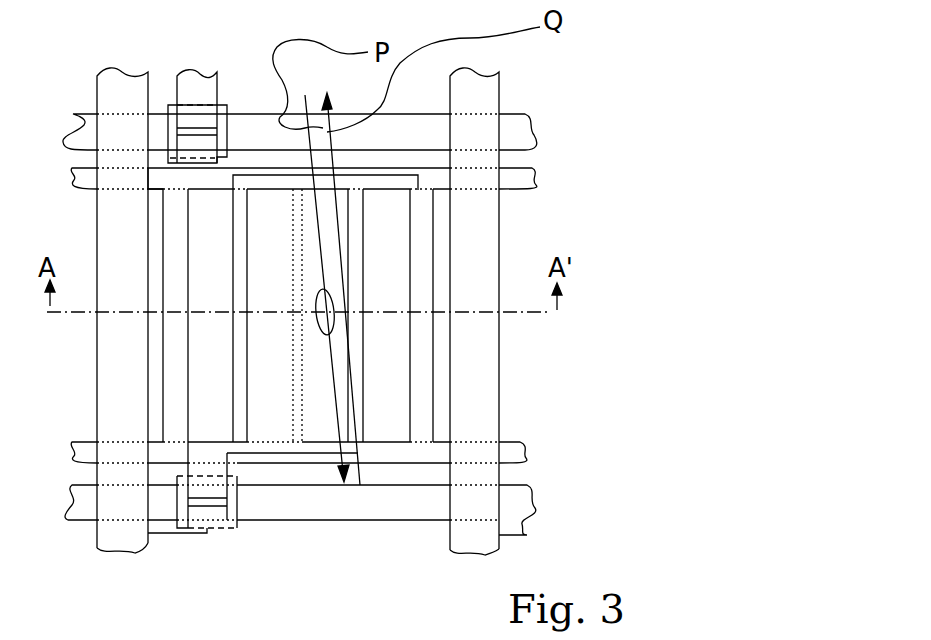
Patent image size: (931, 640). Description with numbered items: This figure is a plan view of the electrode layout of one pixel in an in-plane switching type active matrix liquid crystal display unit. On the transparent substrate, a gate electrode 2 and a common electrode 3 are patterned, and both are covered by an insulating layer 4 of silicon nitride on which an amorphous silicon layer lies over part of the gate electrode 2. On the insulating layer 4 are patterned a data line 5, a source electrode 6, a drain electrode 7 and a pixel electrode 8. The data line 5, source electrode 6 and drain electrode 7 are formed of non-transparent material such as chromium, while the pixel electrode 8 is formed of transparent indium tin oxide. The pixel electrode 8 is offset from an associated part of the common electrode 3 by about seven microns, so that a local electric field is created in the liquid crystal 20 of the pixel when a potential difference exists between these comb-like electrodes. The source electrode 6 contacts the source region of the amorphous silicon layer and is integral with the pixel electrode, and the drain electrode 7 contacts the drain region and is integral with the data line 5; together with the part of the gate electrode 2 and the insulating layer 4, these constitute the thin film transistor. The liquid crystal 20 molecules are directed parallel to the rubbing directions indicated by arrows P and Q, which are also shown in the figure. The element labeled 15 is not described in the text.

The gate electrode 2 is at (430, 505).
The common electrode 3 is at (517, 442).
The insulating layer 4 is at (398, 450).
The data line 5 is at (97, 542).
The source electrode 6 is at (223, 490).
The drain electrode 7 is at (212, 513).
The pixel electrode 8 is at (238, 278).
The contact pad 15 is at (170, 105).
The liquid crystal 20 is at (333, 318).